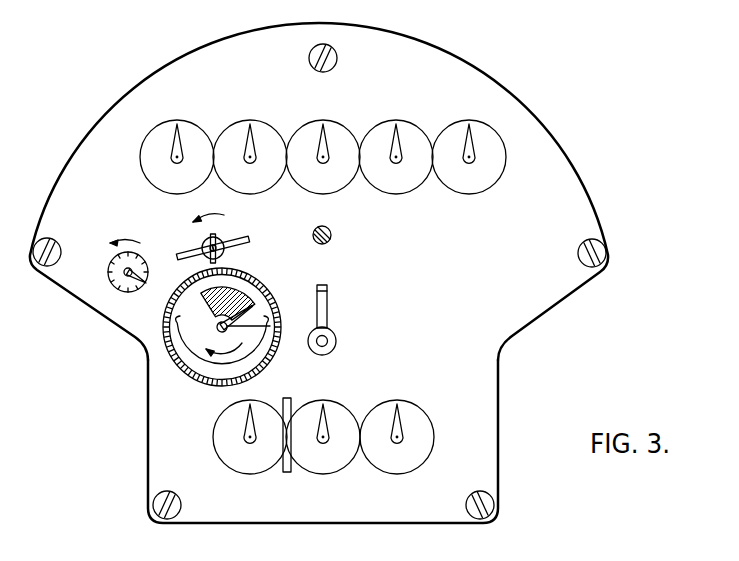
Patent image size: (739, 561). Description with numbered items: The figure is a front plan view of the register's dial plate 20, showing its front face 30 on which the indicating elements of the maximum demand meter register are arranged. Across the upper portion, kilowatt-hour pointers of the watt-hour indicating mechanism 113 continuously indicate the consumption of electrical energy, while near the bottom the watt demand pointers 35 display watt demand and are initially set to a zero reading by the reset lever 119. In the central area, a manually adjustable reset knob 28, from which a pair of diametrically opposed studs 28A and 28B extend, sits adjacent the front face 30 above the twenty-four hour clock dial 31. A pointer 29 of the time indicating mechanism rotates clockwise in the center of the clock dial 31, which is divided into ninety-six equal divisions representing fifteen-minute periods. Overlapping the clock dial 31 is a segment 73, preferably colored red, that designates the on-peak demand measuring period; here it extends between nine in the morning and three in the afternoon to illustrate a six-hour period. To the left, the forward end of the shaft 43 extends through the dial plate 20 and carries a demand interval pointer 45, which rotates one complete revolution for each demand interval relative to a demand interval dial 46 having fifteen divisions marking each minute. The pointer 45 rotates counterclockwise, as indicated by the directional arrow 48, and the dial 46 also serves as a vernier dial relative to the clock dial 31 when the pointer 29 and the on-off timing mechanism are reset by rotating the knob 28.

The dial plate 20 is at (567, 295).
The front face 30 is at (488, 388).
The watt-hour indicating mechanism 113 is at (172, 154).
The watt demand pointers 35 is at (323, 400).
The reset knob 28 is at (223, 240).
The stud 28A is at (195, 253).
The stud 28B is at (245, 246).
The pointer 29 is at (231, 337).
The clock dial 31 is at (188, 378).
The segment 73 is at (217, 326).
The shaft 43 is at (119, 262).
The demand interval pointer 45 is at (145, 261).
The demand interval dial 46 is at (134, 292).
The directional arrow 48 is at (136, 242).
The reset lever 119 is at (328, 313).